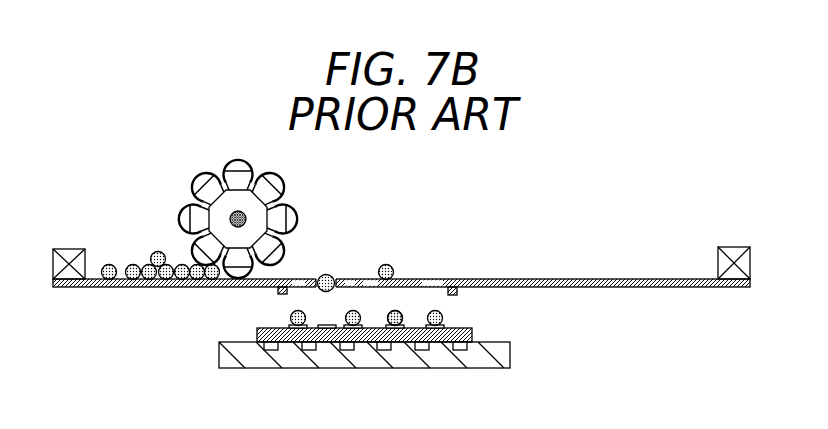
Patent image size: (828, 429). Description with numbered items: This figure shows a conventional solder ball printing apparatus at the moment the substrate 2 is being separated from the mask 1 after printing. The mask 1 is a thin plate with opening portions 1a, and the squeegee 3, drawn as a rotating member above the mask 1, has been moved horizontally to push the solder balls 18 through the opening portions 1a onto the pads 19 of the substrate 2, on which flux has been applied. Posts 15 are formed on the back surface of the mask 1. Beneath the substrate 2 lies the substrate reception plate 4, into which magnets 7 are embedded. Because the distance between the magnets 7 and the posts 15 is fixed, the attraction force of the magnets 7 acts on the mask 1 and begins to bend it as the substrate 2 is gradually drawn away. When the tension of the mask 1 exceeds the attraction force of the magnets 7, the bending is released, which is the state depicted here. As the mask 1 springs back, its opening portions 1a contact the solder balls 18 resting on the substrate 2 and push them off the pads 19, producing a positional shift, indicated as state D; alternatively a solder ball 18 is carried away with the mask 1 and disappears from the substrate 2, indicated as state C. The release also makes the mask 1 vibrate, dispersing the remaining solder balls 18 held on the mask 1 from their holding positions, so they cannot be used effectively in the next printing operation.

The mask 1 is at (592, 279).
The opening portions 1a is at (303, 279).
The squeegee 3 is at (200, 180).
The posts 15 is at (458, 292).
The substrate 2 is at (257, 334).
The substrate reception plate 4 is at (505, 357).
The magnets 7 is at (266, 349).
The solder balls 18 is at (444, 317).
The pad 19 is at (404, 318).
The state of missing solder ball C is at (334, 312).
The state of positional shift D is at (404, 300).